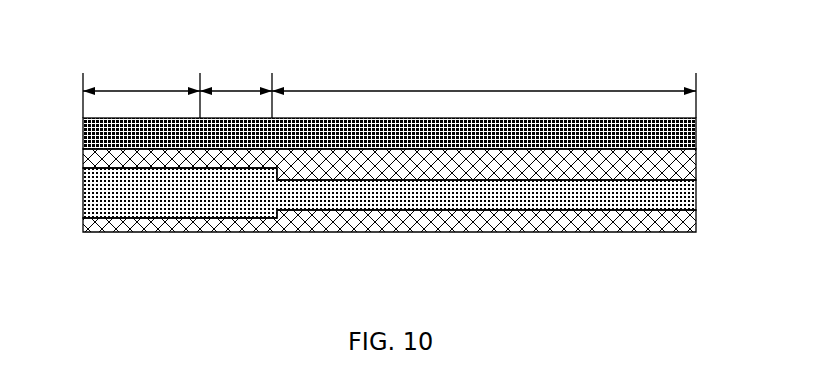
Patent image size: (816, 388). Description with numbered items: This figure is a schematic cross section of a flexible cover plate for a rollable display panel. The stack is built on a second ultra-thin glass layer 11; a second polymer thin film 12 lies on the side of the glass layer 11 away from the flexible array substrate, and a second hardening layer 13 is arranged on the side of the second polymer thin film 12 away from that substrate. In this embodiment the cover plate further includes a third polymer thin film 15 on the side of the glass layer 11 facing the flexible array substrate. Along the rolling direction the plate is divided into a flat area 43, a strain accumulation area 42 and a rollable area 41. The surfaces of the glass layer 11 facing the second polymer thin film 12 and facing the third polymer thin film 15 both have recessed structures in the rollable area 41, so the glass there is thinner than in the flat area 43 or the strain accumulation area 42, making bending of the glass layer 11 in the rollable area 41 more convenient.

The second ultra-thin glass layer 11 is at (103, 200).
The second polymer thin film 12 is at (682, 167).
The second hardening layer 13 is at (83, 125).
The third polymer thin film 15 is at (525, 228).
The rollable area 41 is at (458, 91).
The strain accumulation area 42 is at (237, 90).
The flat area 43 is at (132, 90).